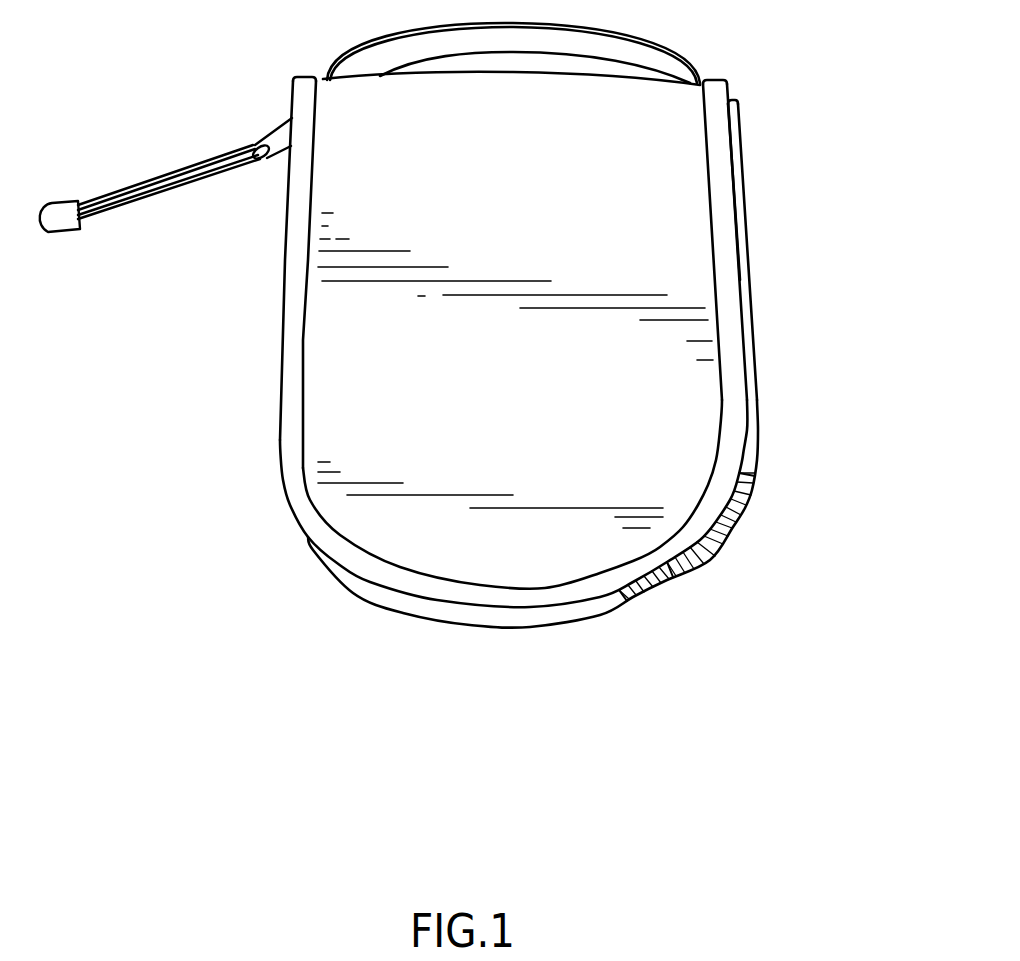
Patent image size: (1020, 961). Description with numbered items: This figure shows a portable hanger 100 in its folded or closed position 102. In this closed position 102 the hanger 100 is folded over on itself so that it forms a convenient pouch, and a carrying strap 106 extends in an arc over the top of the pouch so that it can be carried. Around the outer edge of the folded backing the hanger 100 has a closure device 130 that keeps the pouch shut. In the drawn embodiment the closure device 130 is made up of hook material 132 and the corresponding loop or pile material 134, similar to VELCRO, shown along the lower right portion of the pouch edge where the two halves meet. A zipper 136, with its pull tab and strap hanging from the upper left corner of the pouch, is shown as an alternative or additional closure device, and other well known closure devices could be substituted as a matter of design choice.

The portable hanger 100 is at (374, 689).
The closed position 102 is at (742, 514).
The carrying strap 106 is at (673, 54).
The closure device 130 is at (788, 404).
The hook material 132 is at (668, 562).
The loop or pile material 134 is at (632, 605).
The zipper 136 is at (292, 122).